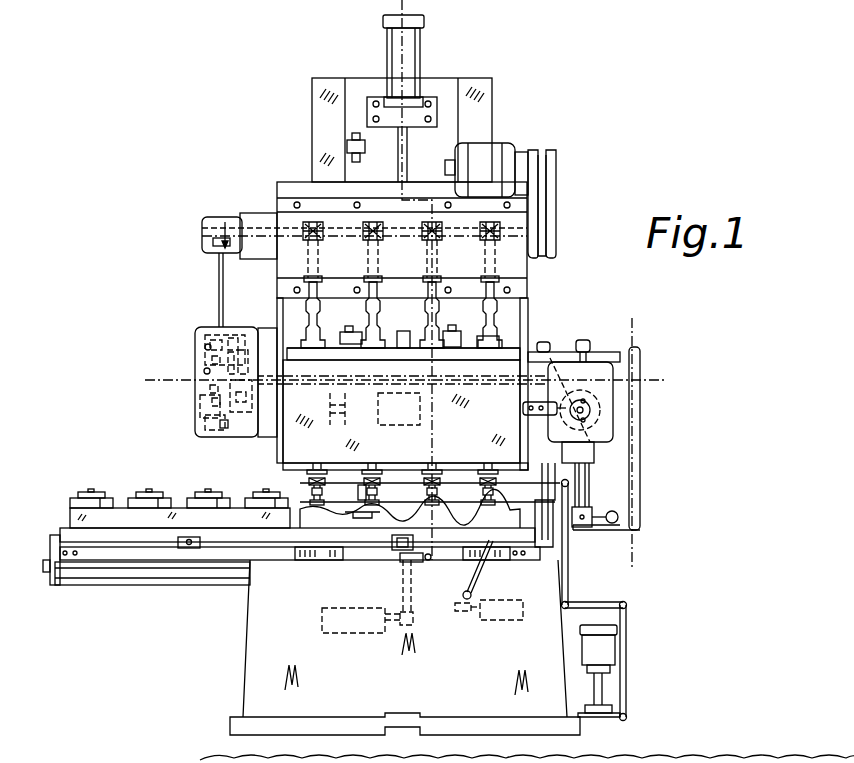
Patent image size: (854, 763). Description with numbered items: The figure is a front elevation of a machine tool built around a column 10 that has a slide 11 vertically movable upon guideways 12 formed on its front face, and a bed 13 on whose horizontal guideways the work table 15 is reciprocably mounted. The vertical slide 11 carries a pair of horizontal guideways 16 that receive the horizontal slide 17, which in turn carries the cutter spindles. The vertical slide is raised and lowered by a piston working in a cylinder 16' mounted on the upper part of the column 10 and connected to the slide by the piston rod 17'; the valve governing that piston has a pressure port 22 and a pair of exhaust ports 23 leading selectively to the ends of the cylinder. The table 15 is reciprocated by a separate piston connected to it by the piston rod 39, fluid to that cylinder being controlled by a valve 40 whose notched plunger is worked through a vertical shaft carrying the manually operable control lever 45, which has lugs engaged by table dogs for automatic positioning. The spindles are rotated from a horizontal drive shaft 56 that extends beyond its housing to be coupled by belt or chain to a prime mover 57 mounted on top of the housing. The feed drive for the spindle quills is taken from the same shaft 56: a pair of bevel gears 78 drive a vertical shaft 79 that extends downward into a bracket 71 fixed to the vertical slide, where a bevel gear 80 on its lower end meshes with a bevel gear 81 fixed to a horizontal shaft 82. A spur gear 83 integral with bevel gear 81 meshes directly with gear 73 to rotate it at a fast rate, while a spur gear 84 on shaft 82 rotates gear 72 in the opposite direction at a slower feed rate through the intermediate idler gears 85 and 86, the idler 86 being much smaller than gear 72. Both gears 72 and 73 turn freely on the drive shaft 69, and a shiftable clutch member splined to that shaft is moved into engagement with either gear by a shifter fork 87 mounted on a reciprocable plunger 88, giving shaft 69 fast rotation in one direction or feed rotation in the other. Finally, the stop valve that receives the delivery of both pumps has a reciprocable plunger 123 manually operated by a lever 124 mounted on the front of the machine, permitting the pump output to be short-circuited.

The column 10 is at (487, 88).
The slide 11 is at (528, 307).
The guideways 12 is at (318, 160).
The bed 13 is at (258, 647).
The work table 15 is at (68, 535).
The horizontal guideways 16 is at (396, 416).
The cylinder 16' is at (425, 61).
The horizontal slide 17 is at (429, 334).
The piston rod 17' is at (404, 139).
The pressure port 22 is at (155, 366).
The exhaust ports 23 is at (417, 12).
The piston rod 39 is at (130, 580).
The valve 40 is at (336, 633).
The control lever 45 is at (421, 563).
The horizontal drive shaft 56 is at (257, 228).
The prime mover 57 is at (490, 148).
The drive shaft 69 is at (268, 375).
The bracket 71 is at (197, 345).
The gear 72 is at (208, 389).
The gear 73 is at (246, 397).
The bevel gears 78 is at (220, 232).
The vertical shaft 79 is at (218, 266).
The bevel gear 80 is at (233, 340).
The bevel gear 81 is at (231, 352).
The horizontal shaft 82 is at (215, 340).
The spur gear 83 is at (243, 350).
The spur gear 84 is at (206, 345).
The idler gear 85 is at (205, 371).
The idler gear 86 is at (211, 360).
The shifter fork 87 is at (212, 402).
The reciprocable plunger 88 is at (222, 428).
The valve plunger 123 is at (490, 618).
The lever 124 is at (476, 569).